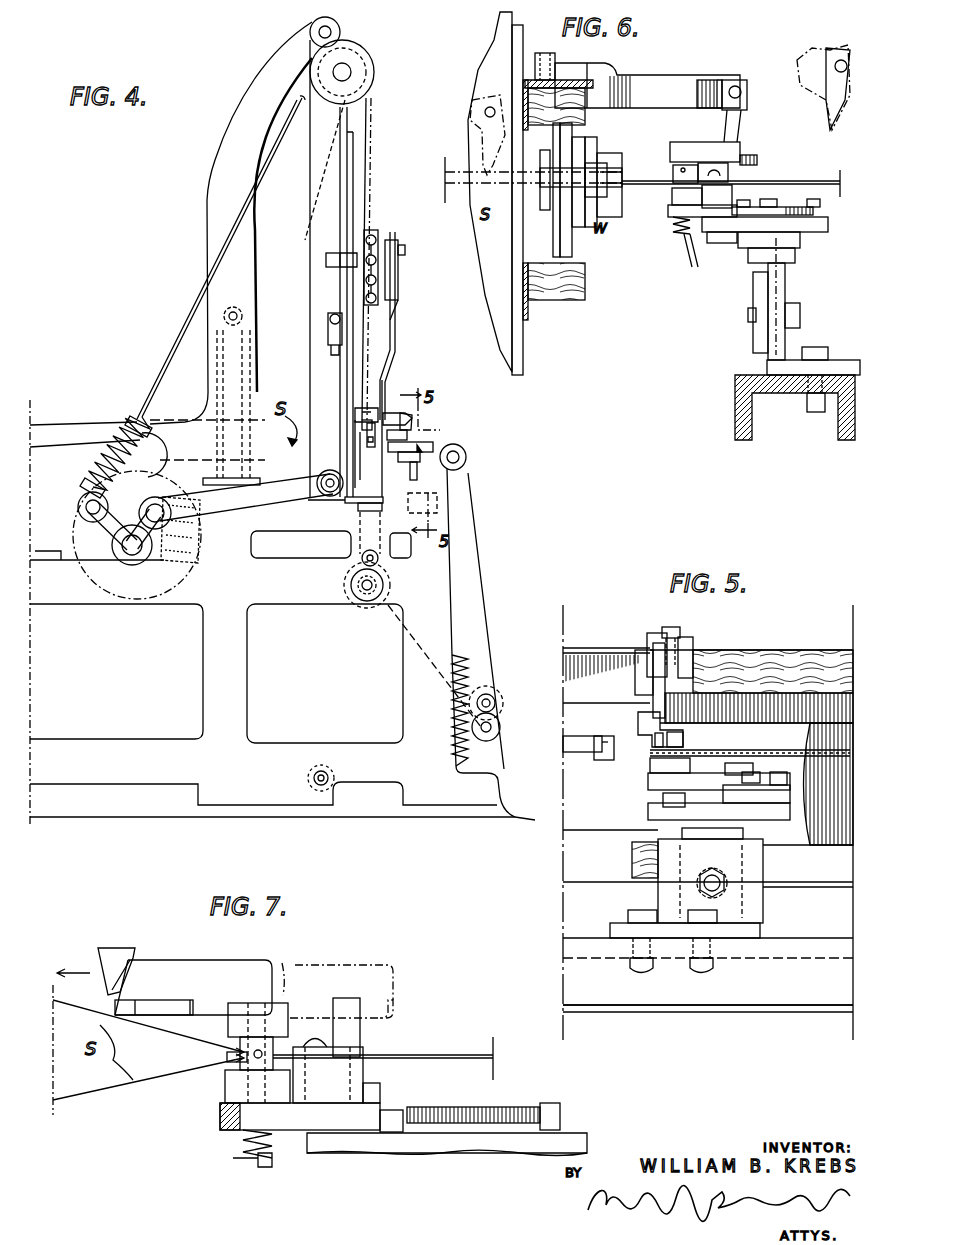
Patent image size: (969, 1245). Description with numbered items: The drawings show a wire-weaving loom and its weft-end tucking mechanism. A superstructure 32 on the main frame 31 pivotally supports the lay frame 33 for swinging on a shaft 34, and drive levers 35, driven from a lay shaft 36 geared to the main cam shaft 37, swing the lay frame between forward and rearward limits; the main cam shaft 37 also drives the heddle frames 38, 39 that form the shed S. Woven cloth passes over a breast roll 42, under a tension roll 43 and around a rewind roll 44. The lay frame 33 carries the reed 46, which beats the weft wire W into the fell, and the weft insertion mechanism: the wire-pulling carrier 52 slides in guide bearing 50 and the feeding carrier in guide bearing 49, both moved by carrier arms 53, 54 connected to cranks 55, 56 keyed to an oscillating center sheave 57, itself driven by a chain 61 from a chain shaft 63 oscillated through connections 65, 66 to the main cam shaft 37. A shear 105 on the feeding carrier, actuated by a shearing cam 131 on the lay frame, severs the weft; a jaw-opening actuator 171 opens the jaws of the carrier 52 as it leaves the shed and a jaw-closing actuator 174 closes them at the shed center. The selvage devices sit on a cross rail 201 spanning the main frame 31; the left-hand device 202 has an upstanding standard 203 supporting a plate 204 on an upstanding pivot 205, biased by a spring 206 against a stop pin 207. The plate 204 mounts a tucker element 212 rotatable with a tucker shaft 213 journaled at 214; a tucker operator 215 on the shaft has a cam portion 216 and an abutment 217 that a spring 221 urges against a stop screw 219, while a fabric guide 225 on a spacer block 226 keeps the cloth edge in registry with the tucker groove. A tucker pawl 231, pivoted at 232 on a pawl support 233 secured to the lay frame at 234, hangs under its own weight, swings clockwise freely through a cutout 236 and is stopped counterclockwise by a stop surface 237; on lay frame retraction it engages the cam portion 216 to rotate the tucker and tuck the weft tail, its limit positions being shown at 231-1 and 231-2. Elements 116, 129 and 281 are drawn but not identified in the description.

In FIG. 4, the main frame 31 is at (203, 686).
In FIG. 4, the superstructure 32 is at (210, 177).
In FIG. 4, the lay frame 33 is at (327, 368).
In FIG. 4, the shaft 34 is at (314, 24).
In FIG. 4, the drive levers 35 is at (243, 508).
In FIG. 4, the lay shaft 36 is at (134, 452).
In FIG. 4, the main cam shaft 37 is at (131, 552).
In FIG. 4, the heddle frame 38 is at (224, 392).
In FIG. 4, the heddle frame 39 is at (232, 358).
In FIG. 4, the breast roll 42 is at (467, 456).
In FIG. 4, the tension roll 43 is at (488, 742).
In FIG. 4, the rewind roll 44 is at (366, 606).
In FIG. 6, the reed 46 is at (565, 267).
In FIG. 5, the reed 46 is at (765, 665).
In FIG. 4, the guide bearing 49 is at (357, 412).
In FIG. 6, the guide bearing 50 is at (597, 190).
In FIG. 6, the wire-pulling carrier 52 is at (603, 165).
In FIG. 4, the carrier arm 53 is at (395, 340).
In FIG. 4, the carrier arm 54 is at (333, 342).
In FIG. 4, the crank 55 is at (392, 272).
In FIG. 4, the crank 56 is at (340, 302).
In FIG. 4, the oscillating center sheave 57 is at (372, 240).
In FIG. 4, the chain 61 is at (369, 160).
In FIG. 4, the chain shaft 63 is at (347, 68).
In FIG. 4, the connection 65 is at (190, 310).
In FIG. 4, the connection 66 is at (312, 228).
In FIG. 5, the shear 105 is at (600, 750).
In FIG. 4, the member 116 is at (368, 442).
In FIG. 4, the rod 129 is at (370, 478).
In FIG. 5, the shearing cam 131 is at (606, 765).
In FIG. 6, the jaw-opening actuator 171 is at (575, 172).
In FIG. 5, the jaw-closing actuator 174 is at (580, 740).
In FIG. 4, the cross rail 201 is at (440, 503).
In FIG. 6, the cross rail 201 is at (735, 404).
In FIG. 5, the cross rail 201 is at (757, 1003).
In FIG. 4, the left-hand selvage-forming device 202 is at (425, 443).
In FIG. 6, the left-hand selvage-forming device 202 is at (807, 242).
In FIG. 5, the left-hand selvage-forming device 202 is at (819, 919).
In FIG. 7, the left-hand selvage-forming device 202 is at (480, 1018).
In FIG. 6, the upstanding standard 203 is at (752, 297).
In FIG. 5, the upstanding standard 203 is at (700, 859).
In FIG. 7, the upstanding standard 203 is at (445, 1152).
In FIG. 4, the plate 204 is at (395, 457).
In FIG. 6, the plate 204 is at (672, 210).
In FIG. 5, the plate 204 is at (648, 806).
In FIG. 7, the plate 204 is at (220, 1112).
In FIG. 5, the upstanding pivot 205 is at (758, 768).
In FIG. 7, the upstanding pivot 205 is at (383, 1095).
In FIG. 6, the spring 206 is at (790, 205).
In FIG. 7, the spring 206 is at (520, 1107).
In FIG. 7, the stop pin 207 is at (390, 1130).
In FIG. 6, the tucker element 212 is at (677, 180).
In FIG. 7, the tucker element 212 is at (220, 1060).
In FIG. 6, the tucker shaft 213 is at (688, 240).
In FIG. 7, the tucker shaft 213 is at (240, 1163).
In FIG. 6, the journal 214 is at (673, 196).
In FIG. 5, the journal 214 is at (692, 772).
In FIG. 7, the journal 214 is at (230, 1090).
In FIG. 4, the tucker operator 215 is at (420, 428).
In FIG. 6, the tucker operator 215 is at (692, 147).
In FIG. 5, the tucker operator 215 is at (640, 725).
In FIG. 7, the tucker operator 215 is at (232, 945).
In FIG. 7, the cam portion 216 is at (140, 962).
In FIG. 7, the abutment 217 is at (142, 1005).
In FIG. 6, the stop screw 219 is at (730, 176).
In FIG. 5, the stop screw 219 is at (656, 742).
In FIG. 7, the stop screw 219 is at (360, 1032).
In FIG. 6, the spring 221 is at (680, 226).
In FIG. 7, the spring 221 is at (275, 1160).
In FIG. 5, the fabric guide 225 is at (700, 752).
In FIG. 7, the fabric guide 225 is at (290, 1050).
In FIG. 6, the spacer block 226 is at (727, 190).
In FIG. 5, the spacer block 226 is at (652, 780).
In FIG. 7, the spacer block 226 is at (365, 1077).
In FIG. 6, the tucker pawl 231 is at (745, 122).
In FIG. 5, the tucker pawl 231 is at (650, 703).
In FIG. 7, the tucker pawl 231 is at (105, 948).
In FIG. 6, the forward limit position 231-1 is at (845, 118).
In FIG. 6, the rearward limit position 231-2 is at (483, 153).
In FIG. 6, the pivot 232 is at (745, 82).
In FIG. 5, the pivot 232 is at (690, 655).
In FIG. 4, the pawl support 233 is at (390, 420).
In FIG. 6, the pawl support 233 is at (634, 80).
In FIG. 5, the pawl support 233 is at (660, 634).
In FIG. 6, the fastening 234 is at (555, 58).
In FIG. 5, the fastening 234 is at (672, 626).
In FIG. 6, the cutout 236 is at (700, 97).
In FIG. 6, the stop surface 237 is at (724, 80).
In FIG. 4, the member 281 is at (418, 430).